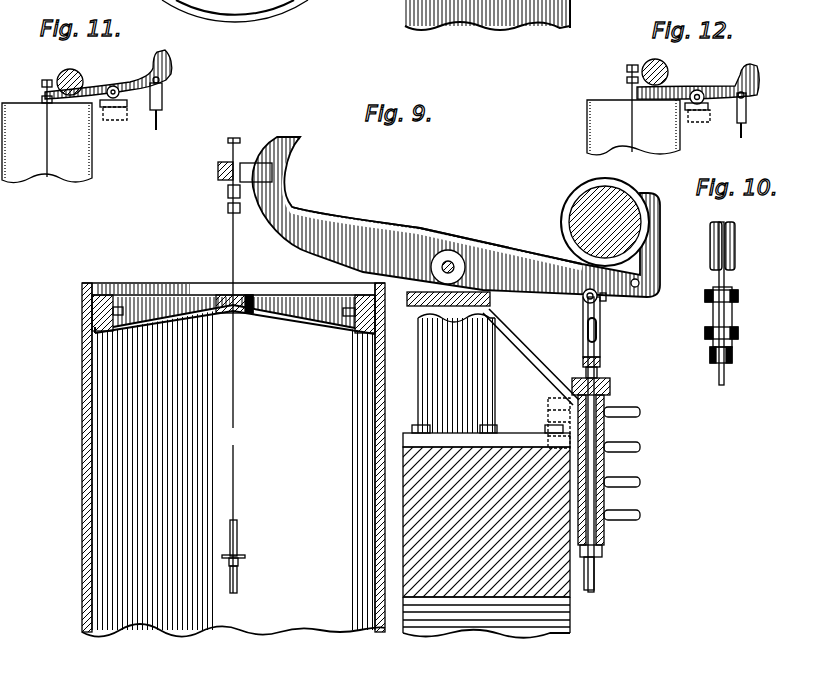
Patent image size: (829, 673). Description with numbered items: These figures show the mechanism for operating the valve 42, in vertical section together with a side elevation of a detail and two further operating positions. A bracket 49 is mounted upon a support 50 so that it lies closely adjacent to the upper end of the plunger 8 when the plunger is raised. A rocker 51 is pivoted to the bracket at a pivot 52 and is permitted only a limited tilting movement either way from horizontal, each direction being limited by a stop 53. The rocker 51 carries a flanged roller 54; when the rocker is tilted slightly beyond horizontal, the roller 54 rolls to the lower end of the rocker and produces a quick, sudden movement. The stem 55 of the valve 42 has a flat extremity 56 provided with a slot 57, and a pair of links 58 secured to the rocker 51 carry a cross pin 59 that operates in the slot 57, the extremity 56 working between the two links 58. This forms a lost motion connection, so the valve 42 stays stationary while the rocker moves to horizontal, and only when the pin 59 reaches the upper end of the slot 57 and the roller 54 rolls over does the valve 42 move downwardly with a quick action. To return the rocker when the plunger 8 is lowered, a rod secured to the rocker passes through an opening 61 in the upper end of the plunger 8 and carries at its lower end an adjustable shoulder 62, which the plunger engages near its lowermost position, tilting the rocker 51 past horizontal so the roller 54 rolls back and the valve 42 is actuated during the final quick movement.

In FIG. 9, the plunger 8 is at (82, 497).
In FIG. 11, the plunger 8 is at (92, 173).
In FIG. 12, the plunger 8 is at (680, 138).
In FIG. 9, the valve 42 is at (614, 465).
In FIG. 9, the bracket 49 is at (418, 380).
In FIG. 9, the support 50 is at (555, 592).
In FIG. 9, the rocker 51 is at (420, 237).
In FIG. 11, the rocker 51 is at (146, 80).
In FIG. 12, the rocker 51 is at (725, 86).
In FIG. 10, the rocker 51 is at (734, 252).
In FIG. 9, the pivot 52 is at (453, 261).
In FIG. 11, the pivot 52 is at (112, 86).
In FIG. 12, the pivot 52 is at (697, 90).
In FIG. 9, the stop 53 is at (416, 308).
In FIG. 9, the flanged roller 54 is at (588, 207).
In FIG. 11, the flanged roller 54 is at (70, 69).
In FIG. 12, the flanged roller 54 is at (658, 56).
In FIG. 9, the valve stem 55 is at (609, 387).
In FIG. 10, the valve stem 55 is at (725, 372).
In FIG. 9, the flat extremity 56 is at (601, 320).
In FIG. 10, the flat extremity 56 is at (733, 317).
In FIG. 9, the slot 57 is at (583, 325).
In FIG. 9, the links 58 is at (583, 306).
In FIG. 10, the links 58 is at (716, 308).
In FIG. 9, the cross pin 59 is at (601, 299).
In FIG. 11, the cross pin 59 is at (163, 93).
In FIG. 12, the cross pin 59 is at (746, 108).
In FIG. 10, the cross pin 59 is at (712, 337).
In FIG. 9, the opening 61 is at (233, 253).
In FIG. 11, the opening 61 is at (47, 137).
In FIG. 12, the opening 61 is at (632, 125).
In FIG. 9, the adjustable shoulder 62 is at (240, 557).